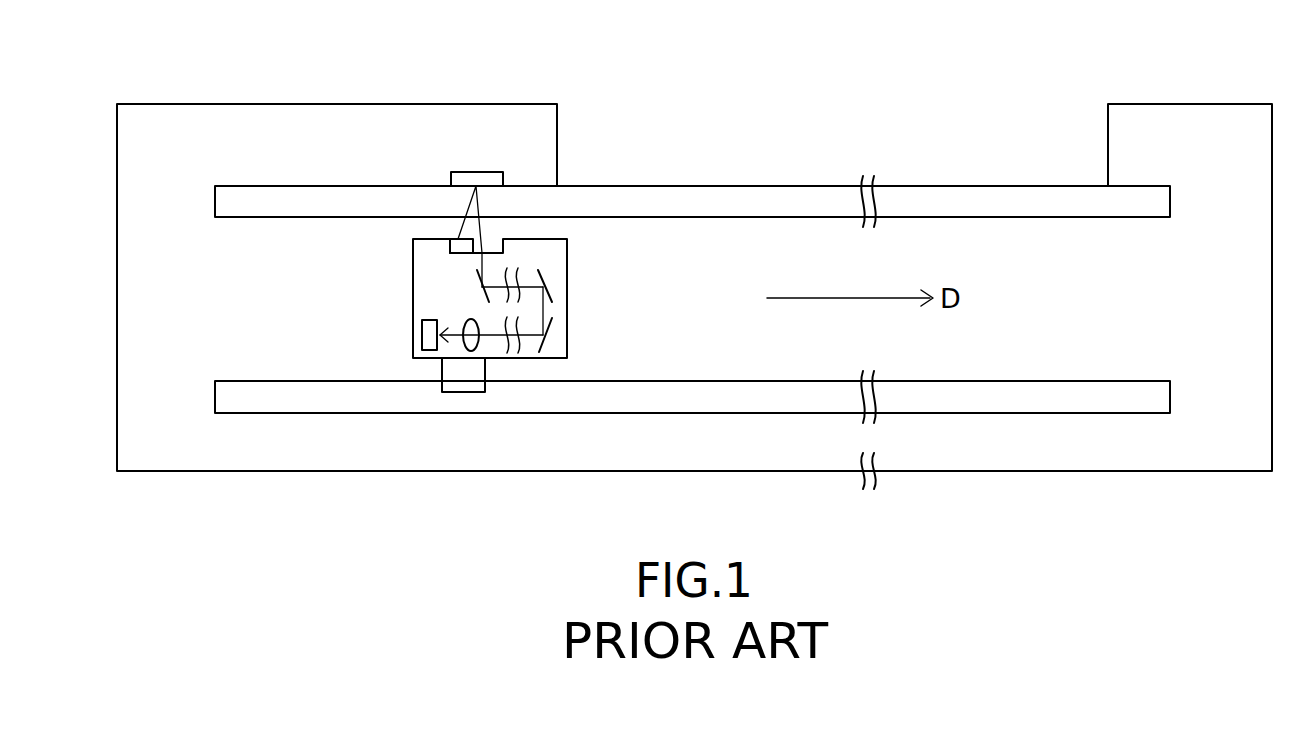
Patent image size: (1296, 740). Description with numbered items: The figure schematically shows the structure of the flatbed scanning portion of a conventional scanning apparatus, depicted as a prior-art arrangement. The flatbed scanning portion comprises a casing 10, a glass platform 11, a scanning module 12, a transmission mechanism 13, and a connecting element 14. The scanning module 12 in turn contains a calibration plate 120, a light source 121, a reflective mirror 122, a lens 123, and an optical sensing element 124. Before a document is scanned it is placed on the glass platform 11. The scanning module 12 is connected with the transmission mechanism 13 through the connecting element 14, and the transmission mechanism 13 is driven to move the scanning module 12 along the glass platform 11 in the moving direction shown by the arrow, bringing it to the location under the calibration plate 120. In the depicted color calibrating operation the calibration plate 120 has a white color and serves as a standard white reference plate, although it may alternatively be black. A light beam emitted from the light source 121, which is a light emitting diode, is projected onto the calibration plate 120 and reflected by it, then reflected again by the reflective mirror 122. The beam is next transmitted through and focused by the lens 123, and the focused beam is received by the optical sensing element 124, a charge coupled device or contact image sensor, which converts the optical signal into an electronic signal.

The casing 10 is at (347, 103).
The glass platform 11 is at (980, 200).
The scanning module 12 is at (569, 305).
The transmission mechanism 13 is at (980, 393).
The connecting element 14 is at (458, 375).
The calibration plate 120 is at (488, 172).
The light source 121 is at (460, 239).
The reflective mirror 122 is at (540, 273).
The lens 123 is at (478, 342).
The optical sensing element 124 is at (428, 328).